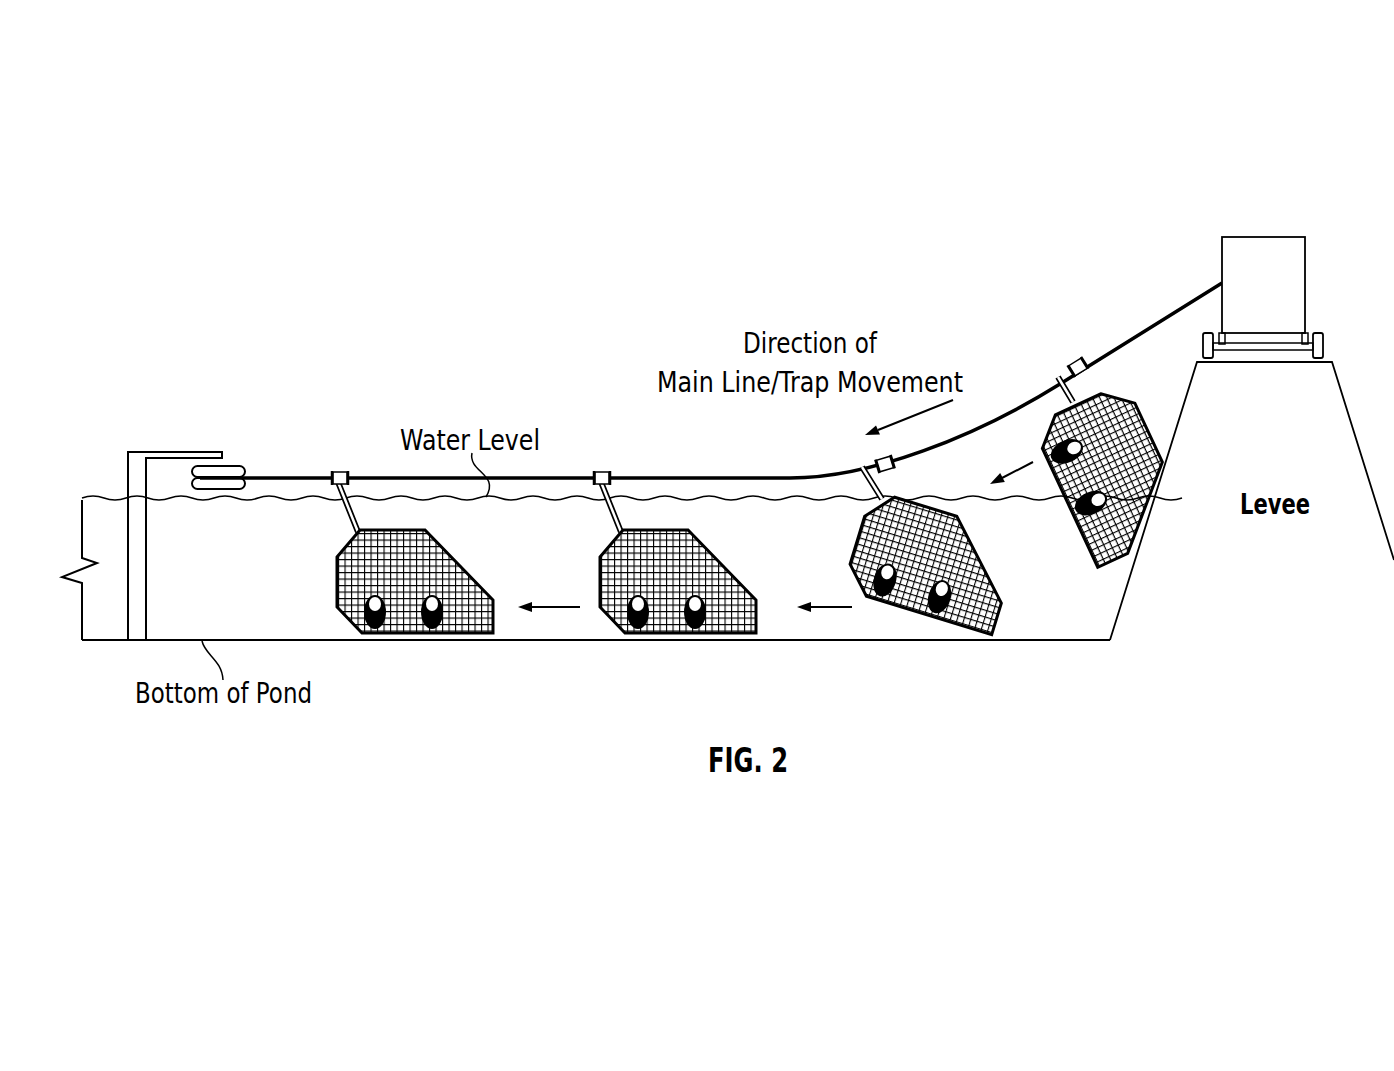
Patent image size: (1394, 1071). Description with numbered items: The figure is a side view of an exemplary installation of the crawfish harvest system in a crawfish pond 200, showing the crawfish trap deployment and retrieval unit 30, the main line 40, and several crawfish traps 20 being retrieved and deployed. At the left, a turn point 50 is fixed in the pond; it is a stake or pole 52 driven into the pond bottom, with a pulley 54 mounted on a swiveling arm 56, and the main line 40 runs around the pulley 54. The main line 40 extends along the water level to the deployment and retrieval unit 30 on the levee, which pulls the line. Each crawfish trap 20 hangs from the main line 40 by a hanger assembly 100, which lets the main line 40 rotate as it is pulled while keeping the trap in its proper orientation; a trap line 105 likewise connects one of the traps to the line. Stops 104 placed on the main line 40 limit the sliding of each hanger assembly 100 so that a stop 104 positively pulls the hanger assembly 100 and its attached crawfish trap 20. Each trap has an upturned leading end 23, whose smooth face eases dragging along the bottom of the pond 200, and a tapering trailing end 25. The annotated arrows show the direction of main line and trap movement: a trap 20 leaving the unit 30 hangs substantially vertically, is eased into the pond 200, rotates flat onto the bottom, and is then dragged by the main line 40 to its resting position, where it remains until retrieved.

The crawfish trap 20 is at (414, 530).
The leading end 23 is at (338, 610).
The trailing end 25 is at (500, 610).
The crawfish trap deployment and retrieval unit 30 is at (1270, 243).
The main line 40 is at (1170, 312).
The turn point 50 is at (225, 393).
The stake or pole 52 is at (112, 507).
The pulley 54 is at (232, 467).
The swiveling arm 56 is at (178, 450).
The hanger assembly 100 is at (338, 508).
The stop 104 is at (332, 468).
The trap line 105 is at (600, 510).
The crawfish pond 200 is at (232, 603).